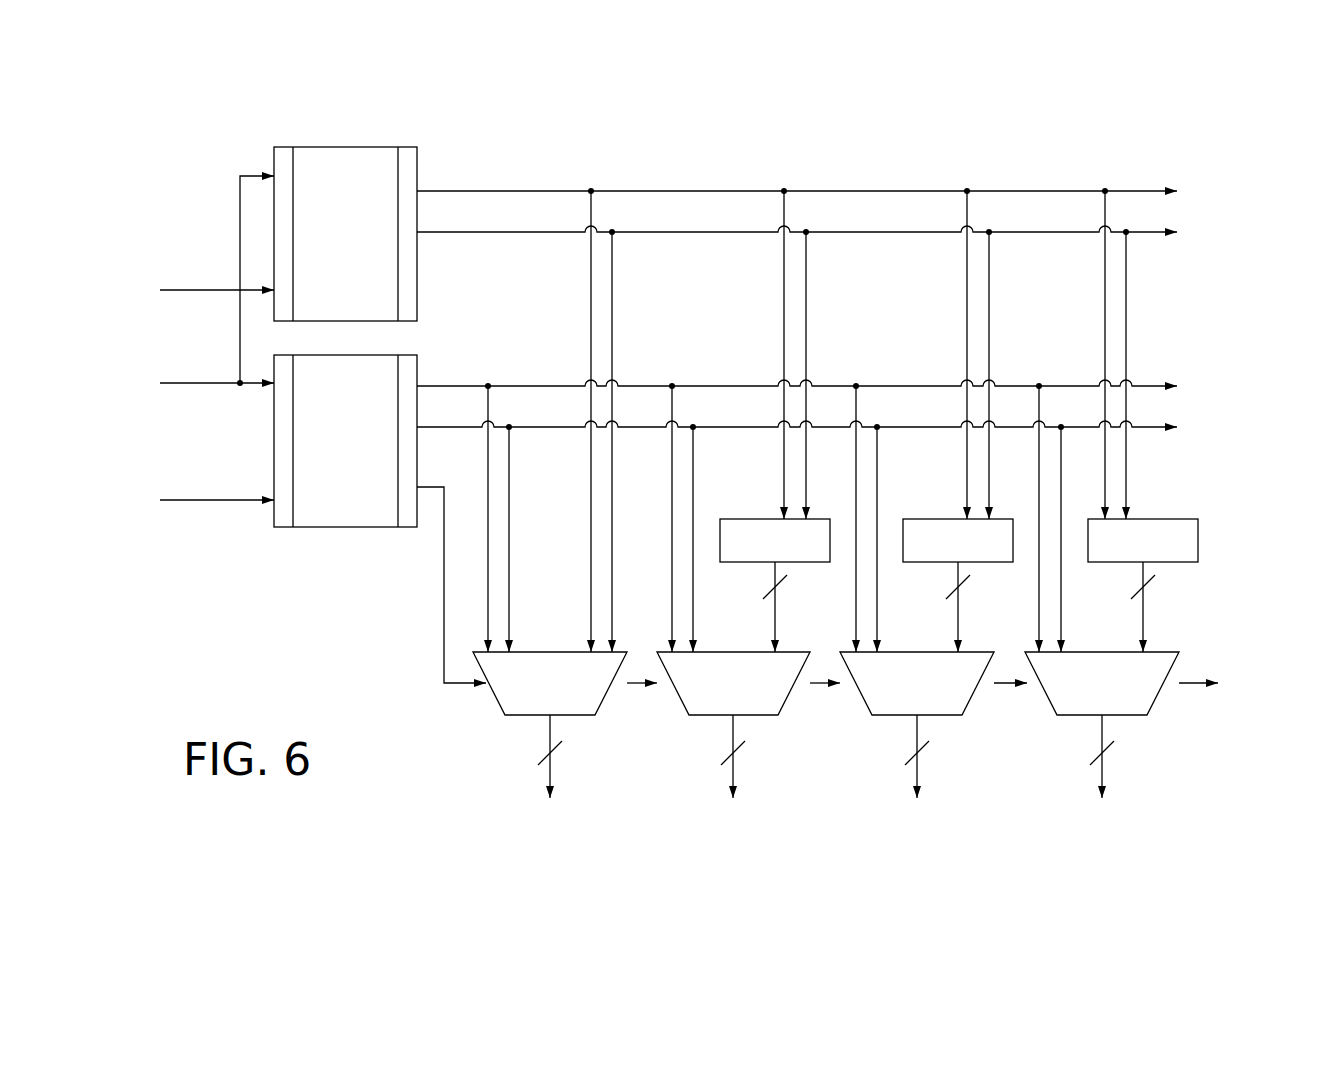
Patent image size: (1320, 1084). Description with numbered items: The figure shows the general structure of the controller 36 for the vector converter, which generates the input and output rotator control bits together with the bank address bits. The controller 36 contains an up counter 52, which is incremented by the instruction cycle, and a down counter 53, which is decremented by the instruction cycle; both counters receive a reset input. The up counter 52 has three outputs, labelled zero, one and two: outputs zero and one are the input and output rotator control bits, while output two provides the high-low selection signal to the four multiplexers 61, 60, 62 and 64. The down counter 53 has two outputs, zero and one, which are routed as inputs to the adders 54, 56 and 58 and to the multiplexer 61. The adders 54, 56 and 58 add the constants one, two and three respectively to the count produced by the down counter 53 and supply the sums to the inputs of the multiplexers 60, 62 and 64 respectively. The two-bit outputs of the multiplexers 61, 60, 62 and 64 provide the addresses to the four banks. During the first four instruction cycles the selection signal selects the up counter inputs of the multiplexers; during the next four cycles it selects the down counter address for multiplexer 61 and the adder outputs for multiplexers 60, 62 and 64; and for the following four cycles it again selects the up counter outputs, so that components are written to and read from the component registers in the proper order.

The controller 36 is at (694, 146).
The up counter 52 is at (338, 527).
The down counter 53 is at (340, 147).
The adder 54 is at (757, 519).
The adder 56 is at (945, 519).
The adder 58 is at (1162, 519).
The multiplexer 60 is at (757, 716).
The multiplexer 61 is at (573, 716).
The multiplexer 62 is at (941, 716).
The multiplexer 64 is at (1125, 716).